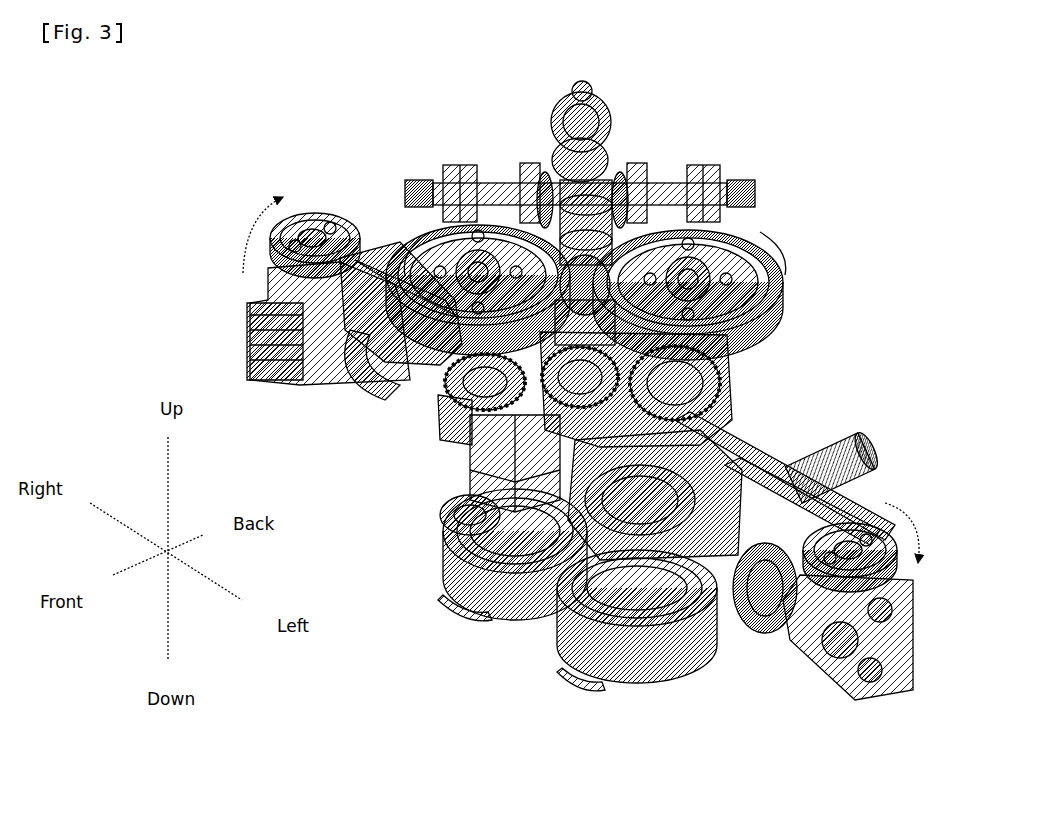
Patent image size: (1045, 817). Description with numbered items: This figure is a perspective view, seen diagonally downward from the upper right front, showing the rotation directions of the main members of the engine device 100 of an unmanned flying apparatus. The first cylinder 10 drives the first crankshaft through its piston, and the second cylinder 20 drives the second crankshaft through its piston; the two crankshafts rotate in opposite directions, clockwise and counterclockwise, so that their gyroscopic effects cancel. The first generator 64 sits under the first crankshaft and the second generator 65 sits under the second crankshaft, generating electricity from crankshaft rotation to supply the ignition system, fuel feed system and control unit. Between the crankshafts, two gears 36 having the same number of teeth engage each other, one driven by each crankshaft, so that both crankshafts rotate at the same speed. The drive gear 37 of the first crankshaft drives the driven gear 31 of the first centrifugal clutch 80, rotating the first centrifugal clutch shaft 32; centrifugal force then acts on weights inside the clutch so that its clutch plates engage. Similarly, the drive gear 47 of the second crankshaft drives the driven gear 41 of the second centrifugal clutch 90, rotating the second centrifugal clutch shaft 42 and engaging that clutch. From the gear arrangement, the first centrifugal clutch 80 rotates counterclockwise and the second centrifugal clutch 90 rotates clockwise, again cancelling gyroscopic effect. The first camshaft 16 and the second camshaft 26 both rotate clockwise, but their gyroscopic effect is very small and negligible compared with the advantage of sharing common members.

The driving apparatus 100 is at (848, 132).
The second centrifugal clutch 90 is at (498, 183).
The first centrifugal clutch 80 is at (780, 297).
The first centrifugal clutch shaft 32 is at (722, 368).
The driven gear 31 is at (727, 398).
The drive gear 37 is at (713, 425).
The first camshaft 16 is at (857, 520).
The first cylinder 10 is at (742, 632).
The first generator 64 is at (690, 680).
The second generator 65 is at (440, 563).
The gear 36 is at (450, 487).
The drive gear 47 is at (453, 472).
The driven gear 41 is at (457, 437).
The second centrifugal clutch shaft 42 is at (430, 413).
The second cylinder 20 is at (333, 393).
The second camshaft 26 is at (310, 213).